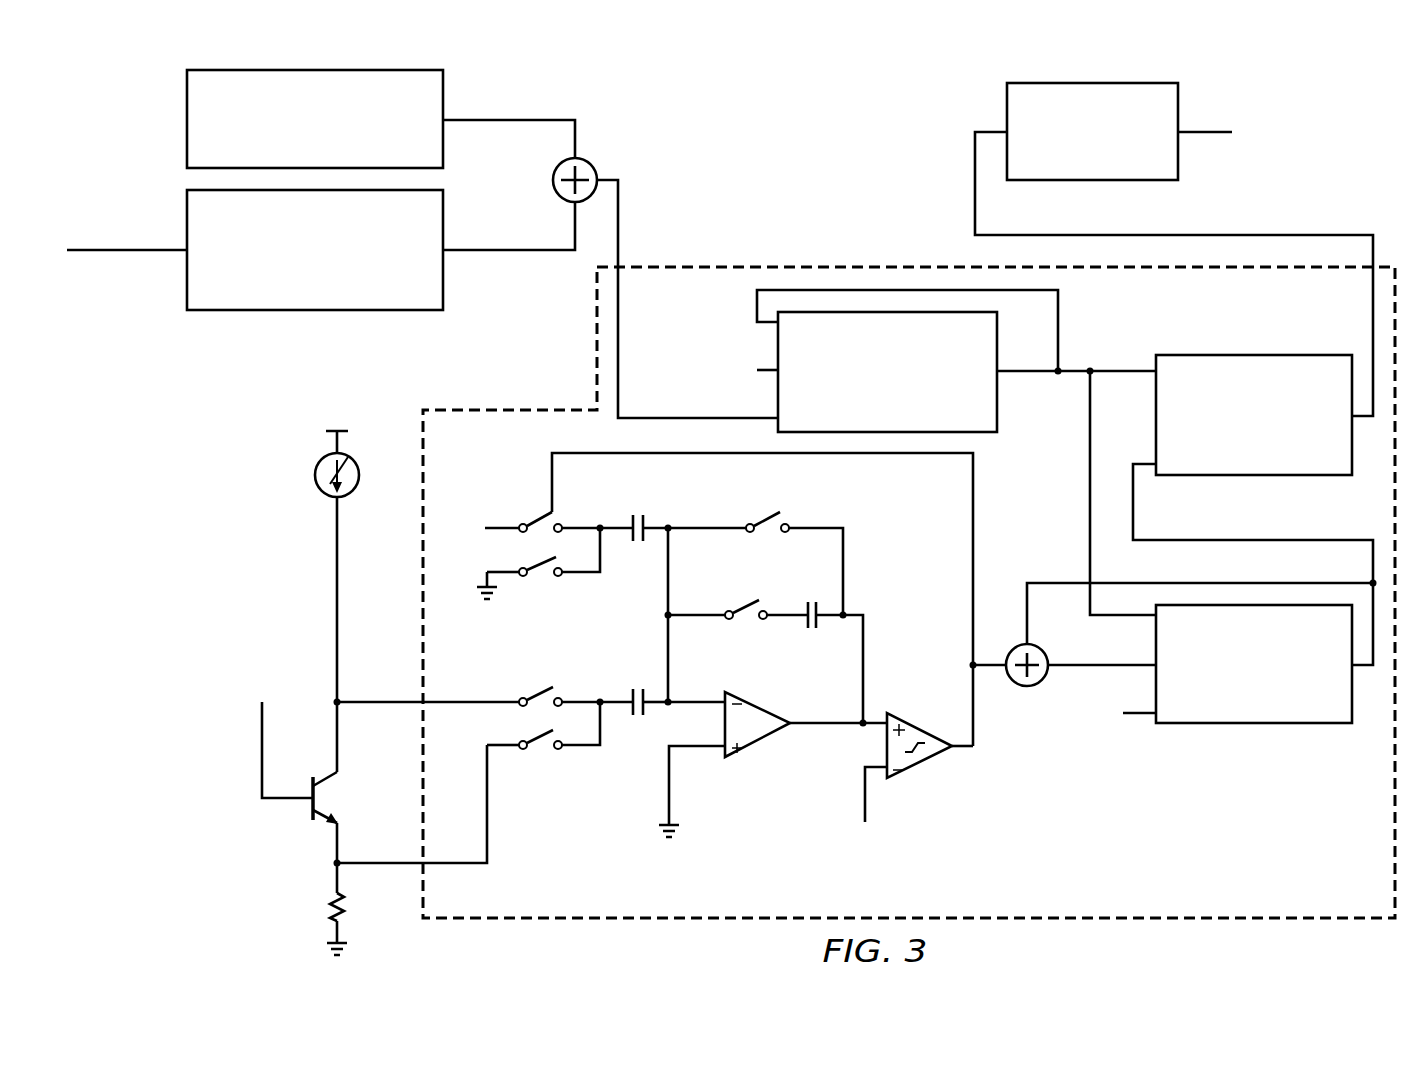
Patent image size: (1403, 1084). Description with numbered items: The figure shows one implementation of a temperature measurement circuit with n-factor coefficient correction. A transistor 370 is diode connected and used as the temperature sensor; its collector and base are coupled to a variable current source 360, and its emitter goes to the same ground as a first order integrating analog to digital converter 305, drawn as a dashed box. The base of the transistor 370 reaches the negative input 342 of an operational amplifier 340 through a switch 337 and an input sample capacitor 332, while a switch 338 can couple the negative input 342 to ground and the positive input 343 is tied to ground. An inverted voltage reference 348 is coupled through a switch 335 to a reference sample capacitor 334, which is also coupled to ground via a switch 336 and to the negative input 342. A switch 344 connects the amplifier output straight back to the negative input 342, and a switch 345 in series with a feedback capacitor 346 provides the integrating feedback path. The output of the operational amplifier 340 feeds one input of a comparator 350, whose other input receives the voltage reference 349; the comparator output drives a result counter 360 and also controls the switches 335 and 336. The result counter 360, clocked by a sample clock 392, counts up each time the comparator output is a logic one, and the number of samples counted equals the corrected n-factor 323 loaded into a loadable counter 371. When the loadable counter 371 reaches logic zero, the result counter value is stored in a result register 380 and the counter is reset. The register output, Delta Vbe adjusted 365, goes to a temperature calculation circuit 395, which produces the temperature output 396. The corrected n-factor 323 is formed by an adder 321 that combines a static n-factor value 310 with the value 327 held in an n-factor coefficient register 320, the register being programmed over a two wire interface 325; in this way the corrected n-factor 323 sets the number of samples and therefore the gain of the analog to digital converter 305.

The static n-factor value 310 is at (187, 115).
The n-factor coefficient register 320 is at (252, 312).
The adder 321 is at (590, 166).
The corrected n-factor 323 is at (620, 226).
The two wire interface 325 is at (130, 253).
The value from n-factor coefficient register 327 is at (506, 252).
The first order integrating analog to digital converter 305 is at (830, 264).
The loadable counter 371 is at (997, 394).
The sample clock 392 is at (692, 354).
The result register 380 is at (1290, 355).
The Delta Vbe adjusted 365 is at (975, 185).
The temperature calculation circuit 395 is at (1007, 110).
The temperature output 396 is at (1211, 128).
The result counter / variable current source 360 is at (316, 470).
The inverted voltage reference 348 is at (468, 513).
The switch 335 is at (539, 515).
The reference sample capacitor 334 is at (639, 513).
The switch 336 is at (538, 586).
The switch 344 is at (772, 516).
The switch 345 is at (749, 602).
The feedback capacitor 346 is at (812, 630).
The switch 337 is at (540, 689).
The input sample capacitor 332 is at (637, 719).
The switch 338 is at (546, 760).
The negative input of operational amplifier 342 is at (691, 700).
The positive input of operational amplifier 343 is at (689, 752).
The operational amplifier 340 is at (755, 748).
The comparator 350 is at (920, 768).
The voltage reference 349 is at (866, 855).
The transistor 370 is at (337, 800).